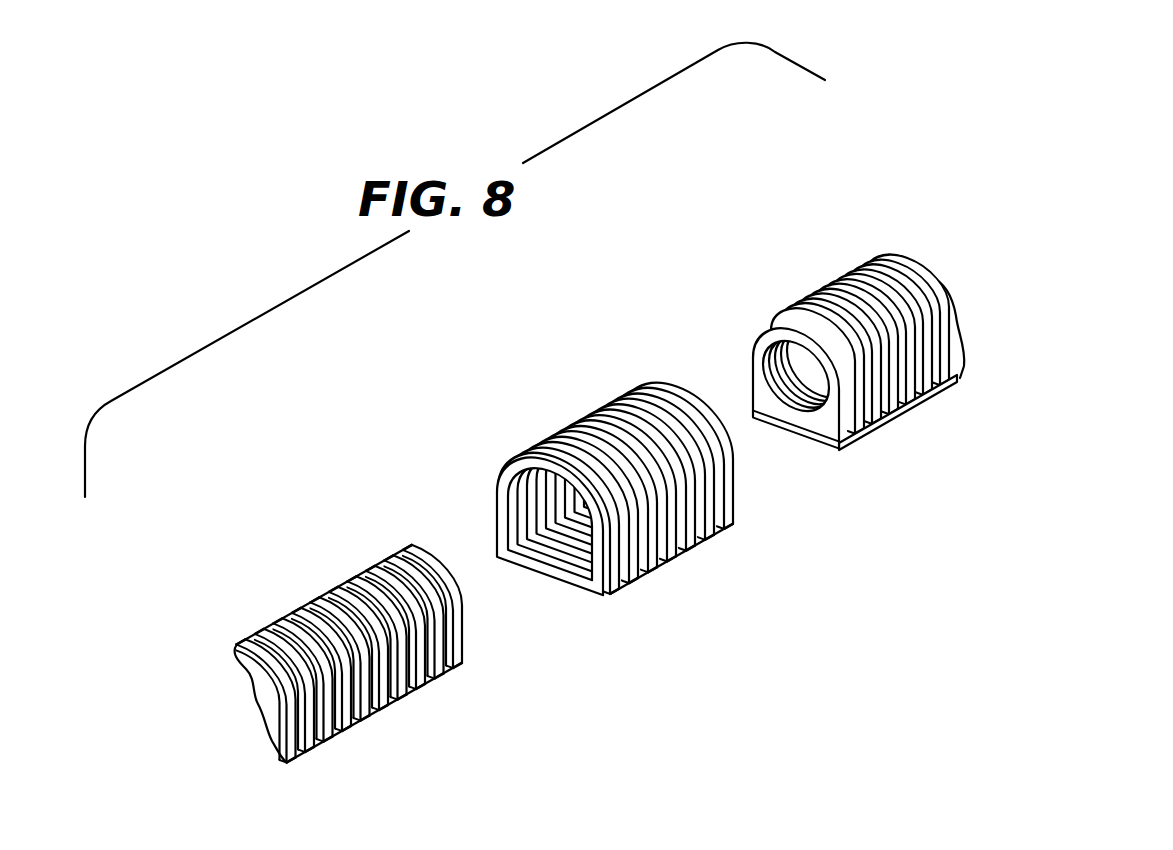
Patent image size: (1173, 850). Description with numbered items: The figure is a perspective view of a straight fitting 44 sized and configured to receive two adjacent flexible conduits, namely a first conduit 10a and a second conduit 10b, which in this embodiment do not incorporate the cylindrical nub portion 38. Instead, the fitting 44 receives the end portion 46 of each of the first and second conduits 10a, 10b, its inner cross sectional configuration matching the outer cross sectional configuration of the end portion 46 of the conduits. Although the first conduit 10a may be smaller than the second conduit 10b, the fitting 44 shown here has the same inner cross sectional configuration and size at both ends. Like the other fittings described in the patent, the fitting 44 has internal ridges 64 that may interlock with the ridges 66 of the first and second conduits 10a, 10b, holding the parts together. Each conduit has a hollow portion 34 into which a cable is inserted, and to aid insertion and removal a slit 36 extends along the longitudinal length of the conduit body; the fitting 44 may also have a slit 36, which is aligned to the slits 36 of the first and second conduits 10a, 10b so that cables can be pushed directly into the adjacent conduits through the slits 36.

The first conduit 10a is at (544, 583).
The second conduit 10b is at (668, 472).
The fitting 44 is at (513, 420).
The slit 36 is at (572, 432).
The hollow portion 34 is at (518, 472).
The cylindrical nub portion 38 is at (622, 397).
The internal ridges 64 is at (518, 508).
The ridges 66 is at (423, 637).
The end portion 46 is at (468, 678).